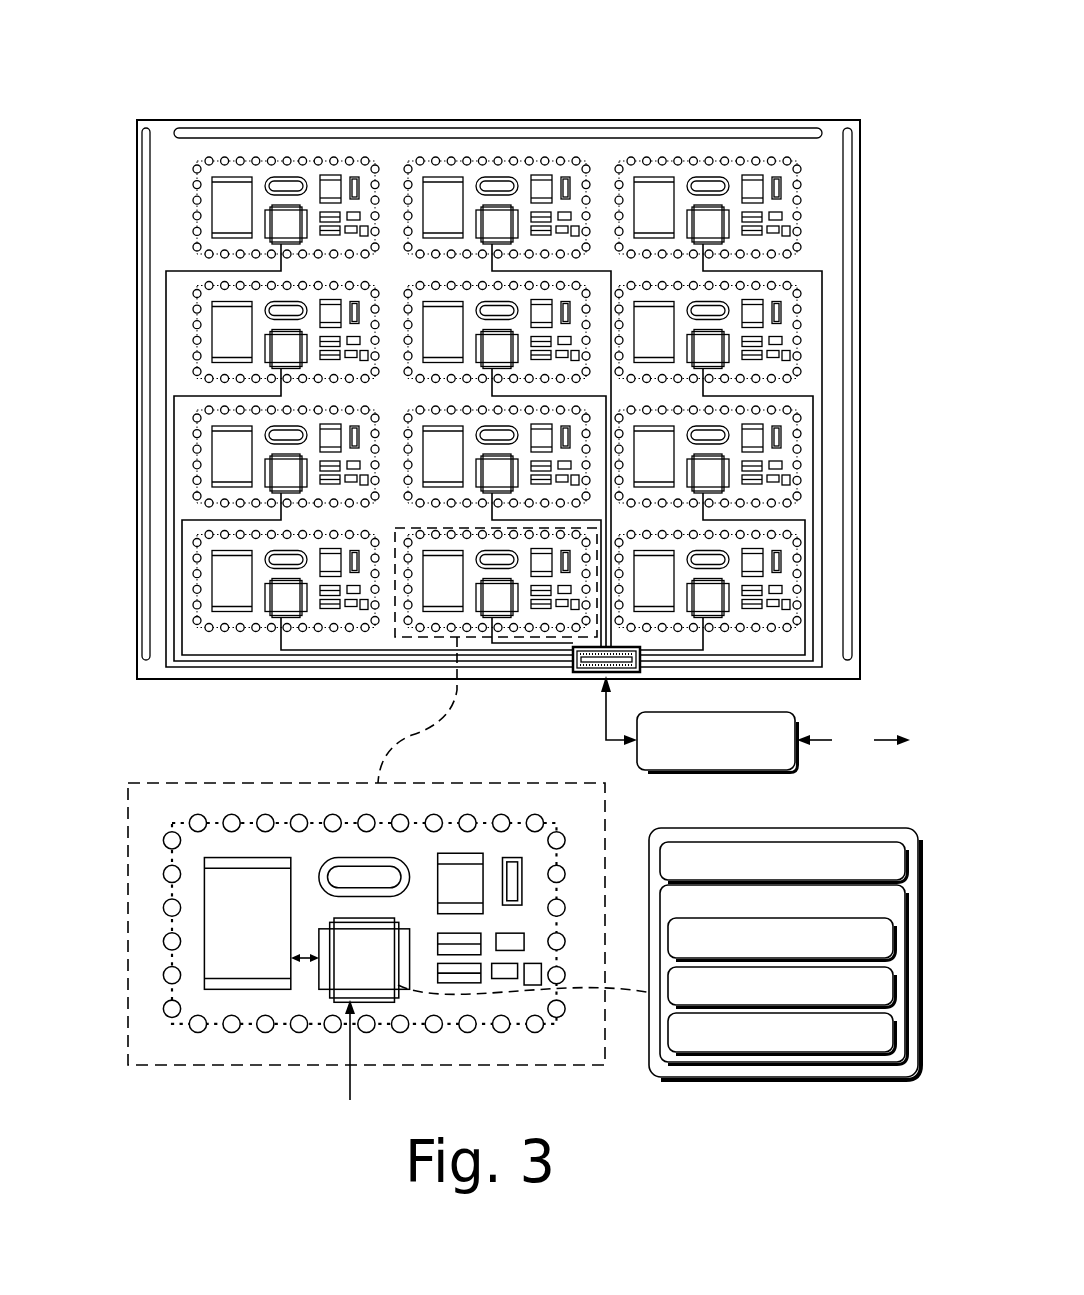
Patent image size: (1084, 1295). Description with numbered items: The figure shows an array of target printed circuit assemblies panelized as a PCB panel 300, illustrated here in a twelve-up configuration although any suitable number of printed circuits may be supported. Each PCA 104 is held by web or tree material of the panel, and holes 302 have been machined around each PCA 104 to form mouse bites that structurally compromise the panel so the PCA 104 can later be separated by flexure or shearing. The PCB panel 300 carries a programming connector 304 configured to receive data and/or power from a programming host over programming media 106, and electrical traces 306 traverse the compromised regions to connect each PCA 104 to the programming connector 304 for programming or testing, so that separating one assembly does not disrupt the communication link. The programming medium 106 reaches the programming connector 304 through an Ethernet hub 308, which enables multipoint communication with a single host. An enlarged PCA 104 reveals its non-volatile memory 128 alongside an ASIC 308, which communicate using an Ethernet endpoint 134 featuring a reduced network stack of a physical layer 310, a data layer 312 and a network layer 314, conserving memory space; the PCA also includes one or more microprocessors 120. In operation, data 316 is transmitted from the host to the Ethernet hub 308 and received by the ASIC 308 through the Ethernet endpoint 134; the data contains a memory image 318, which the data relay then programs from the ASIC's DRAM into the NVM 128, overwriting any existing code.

The PCB panel 300 is at (817, 56).
The target PCA 104 is at (164, 760).
The holes 302 is at (568, 830).
The programming connector 304 is at (578, 674).
The electrical traces 306 is at (368, 677).
The Ethernet hub 308 is at (781, 738).
The data 316 is at (616, 727).
The memory image 318 is at (299, 963).
The non-volatile memory 128 is at (231, 935).
The programming media 106 is at (869, 750).
The microprocessor 120 is at (893, 868).
The Ethernet endpoint 134 is at (893, 911).
The physical layer 310 is at (876, 946).
The data layer 312 is at (876, 993).
The network layer 314 is at (876, 1041).